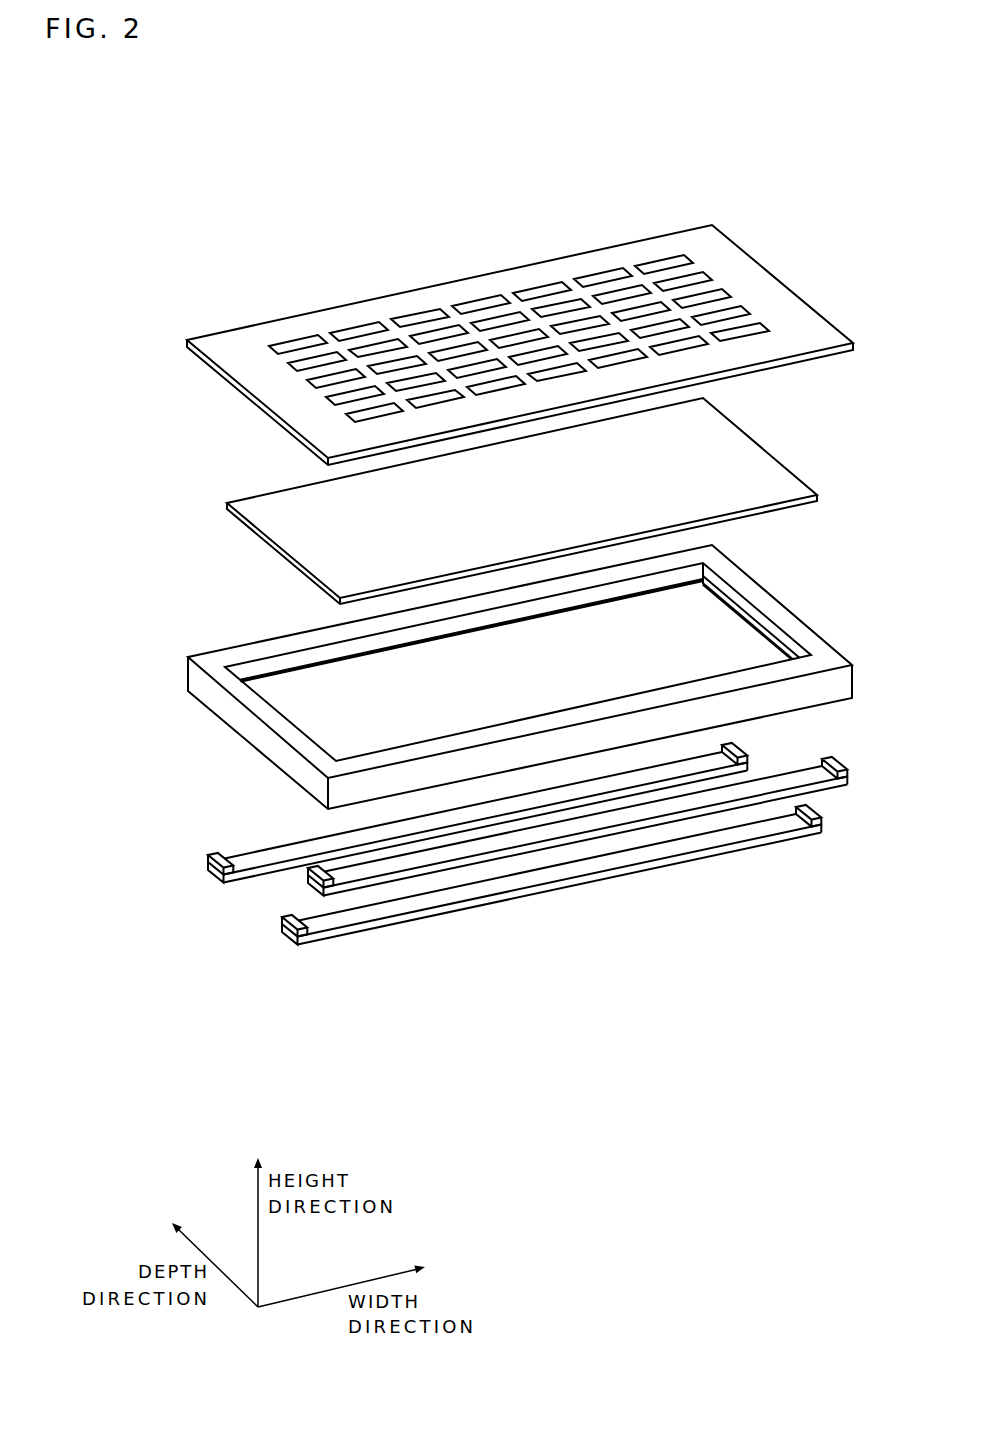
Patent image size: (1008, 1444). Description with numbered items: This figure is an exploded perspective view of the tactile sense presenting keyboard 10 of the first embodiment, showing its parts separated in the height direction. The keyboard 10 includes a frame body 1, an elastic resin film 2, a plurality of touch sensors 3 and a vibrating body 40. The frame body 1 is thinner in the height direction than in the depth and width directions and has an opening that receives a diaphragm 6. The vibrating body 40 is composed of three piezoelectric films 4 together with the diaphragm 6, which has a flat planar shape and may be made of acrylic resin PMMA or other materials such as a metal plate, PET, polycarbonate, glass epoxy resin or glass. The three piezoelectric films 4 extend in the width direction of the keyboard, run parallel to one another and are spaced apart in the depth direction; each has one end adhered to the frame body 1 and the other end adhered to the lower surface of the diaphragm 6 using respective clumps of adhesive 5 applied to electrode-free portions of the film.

The frame body 1 is at (835, 657).
The elastic resin film 2 is at (830, 345).
The touch sensors 3 is at (482, 303).
The piezoelectric films 4 is at (800, 780).
The clumps of adhesive 5 is at (737, 745).
The diaphragm 6 is at (793, 485).
The tactile sense presenting keyboard 10 is at (747, 142).
The vibrating body 40 is at (208, 963).